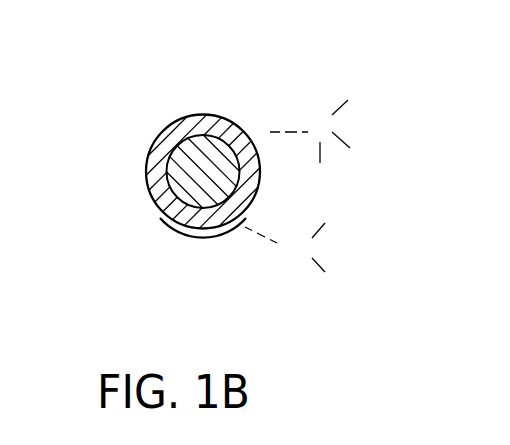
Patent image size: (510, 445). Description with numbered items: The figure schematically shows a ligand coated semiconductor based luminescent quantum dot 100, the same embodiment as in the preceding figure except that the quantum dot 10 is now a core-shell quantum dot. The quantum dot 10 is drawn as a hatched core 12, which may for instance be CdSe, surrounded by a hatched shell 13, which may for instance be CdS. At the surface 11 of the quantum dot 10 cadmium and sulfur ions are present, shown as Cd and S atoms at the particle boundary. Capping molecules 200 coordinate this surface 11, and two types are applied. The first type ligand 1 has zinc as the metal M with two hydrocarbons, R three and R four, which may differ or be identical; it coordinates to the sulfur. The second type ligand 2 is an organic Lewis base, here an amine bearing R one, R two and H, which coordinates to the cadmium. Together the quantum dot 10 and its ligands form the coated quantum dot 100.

The quantum dot particle 10 is at (195, 108).
The core 12 is at (183, 162).
The shell 13 is at (157, 173).
The surface 11 is at (183, 228).
The ligand coated semiconductor based luminescent quantum dot 100 is at (128, 213).
The capping molecules 200 is at (283, 73).
The second type ligand 2 is at (322, 93).
The first type ligand 1 is at (302, 277).